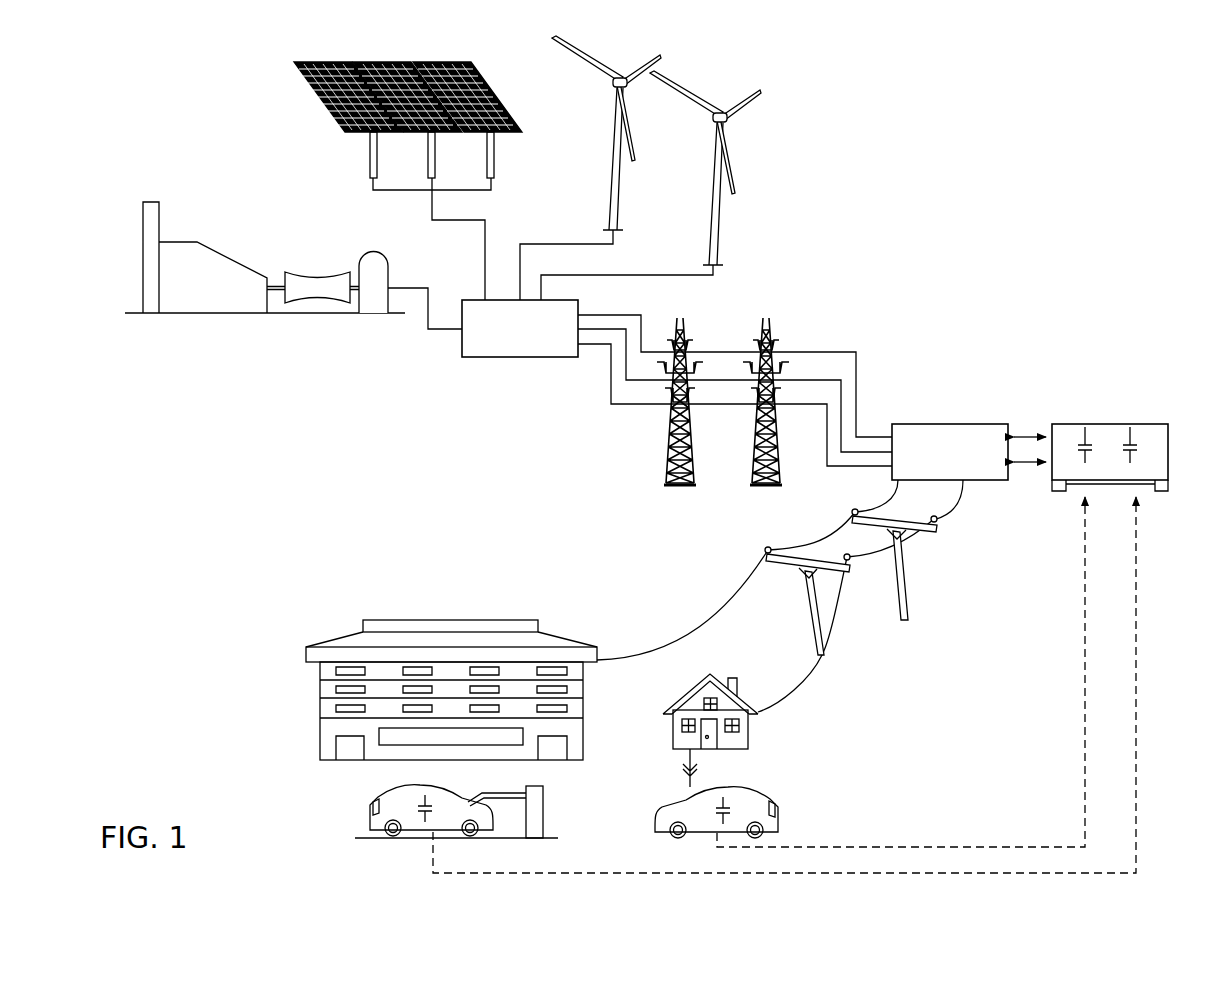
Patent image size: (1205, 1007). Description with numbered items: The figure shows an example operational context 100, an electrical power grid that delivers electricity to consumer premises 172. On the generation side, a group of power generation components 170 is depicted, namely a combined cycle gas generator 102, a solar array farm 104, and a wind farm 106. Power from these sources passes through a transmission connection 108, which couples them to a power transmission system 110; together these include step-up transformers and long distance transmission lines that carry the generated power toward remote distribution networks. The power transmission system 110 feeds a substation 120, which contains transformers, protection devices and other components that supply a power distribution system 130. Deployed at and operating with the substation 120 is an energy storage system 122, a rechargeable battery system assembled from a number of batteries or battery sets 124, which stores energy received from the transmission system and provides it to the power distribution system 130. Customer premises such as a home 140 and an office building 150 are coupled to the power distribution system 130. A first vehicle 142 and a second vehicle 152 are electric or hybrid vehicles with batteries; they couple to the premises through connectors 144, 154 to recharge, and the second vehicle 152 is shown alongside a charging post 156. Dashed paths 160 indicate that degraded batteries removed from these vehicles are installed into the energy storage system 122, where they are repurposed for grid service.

The operational context 100 is at (1080, 195).
The combined cycle gas generator 102 is at (315, 327).
The solar array farm 104 is at (312, 85).
The wind farm 106 is at (703, 82).
The transmission connection 108 is at (515, 357).
The power transmission system 110 is at (788, 323).
The substation 120 is at (948, 424).
The energy storage system 122 is at (1158, 424).
The batteries or battery sets 124 is at (1083, 430).
The power distribution system 130 is at (748, 545).
The home 140 is at (750, 728).
The first vehicle 142 is at (742, 795).
The connector 144 is at (700, 776).
The office building 150 is at (400, 620).
The second vehicle 152 is at (372, 808).
The connector 154 is at (494, 790).
The charging station 156 is at (545, 795).
The removal and installation of degraded batteries 160 is at (1085, 672).
The power generation components 170 is at (337, 402).
The consumer premises 172 is at (468, 572).